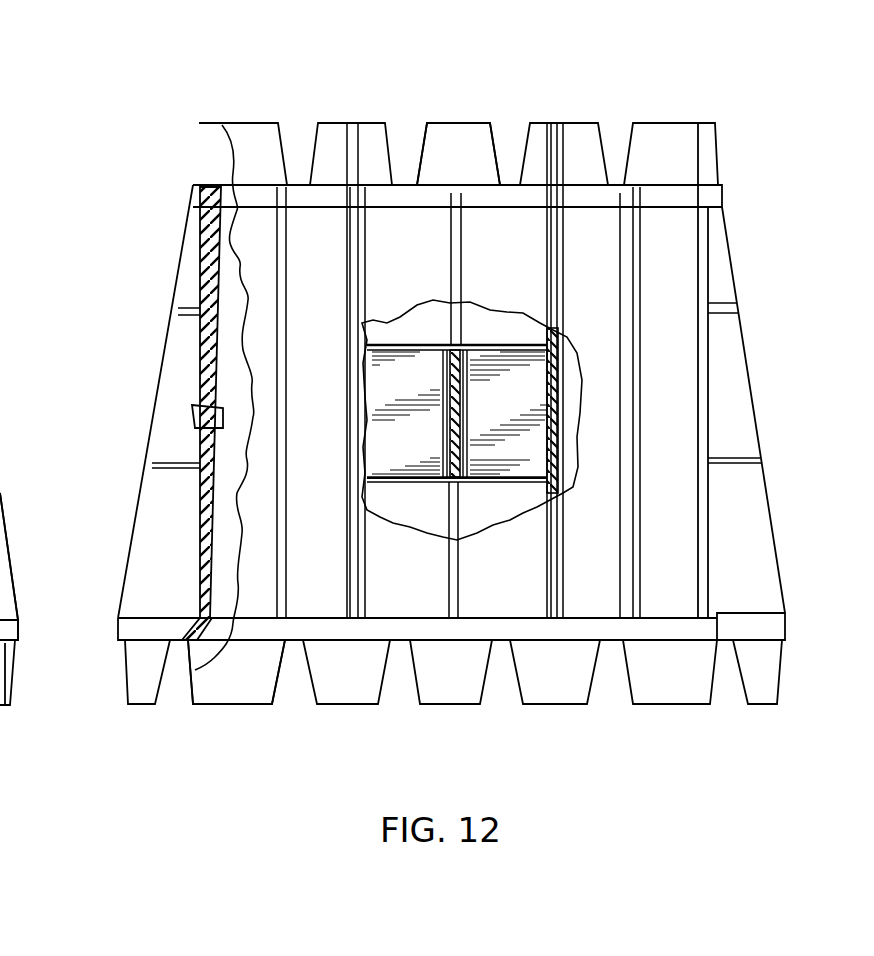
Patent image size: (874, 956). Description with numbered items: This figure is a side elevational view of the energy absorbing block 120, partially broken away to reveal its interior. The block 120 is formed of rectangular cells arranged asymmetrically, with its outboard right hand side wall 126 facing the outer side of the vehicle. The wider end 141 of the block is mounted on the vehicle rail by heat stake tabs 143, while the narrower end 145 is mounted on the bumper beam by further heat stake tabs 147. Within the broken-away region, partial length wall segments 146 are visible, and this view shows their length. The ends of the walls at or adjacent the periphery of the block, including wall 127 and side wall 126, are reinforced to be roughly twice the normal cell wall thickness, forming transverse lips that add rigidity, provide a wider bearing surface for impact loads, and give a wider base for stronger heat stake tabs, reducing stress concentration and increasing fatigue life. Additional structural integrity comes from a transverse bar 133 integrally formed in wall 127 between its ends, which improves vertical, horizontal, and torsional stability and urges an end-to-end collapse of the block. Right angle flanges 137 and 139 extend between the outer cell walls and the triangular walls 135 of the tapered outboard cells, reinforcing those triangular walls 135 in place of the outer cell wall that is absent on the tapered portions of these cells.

The energy absorbing block 120 is at (6, 167).
The right hand side wall 126 is at (8, 362).
The wall 127 is at (197, 552).
The transverse bar 133 is at (193, 422).
The triangular walls 135 is at (0, 552).
The right angle flange 137 is at (175, 468).
The right angle flange 139 is at (193, 308).
The wider end 141 is at (348, 718).
The heat stake tabs 143 is at (250, 687).
The narrower end 145 is at (436, 84).
The wall segments 146 is at (503, 345).
The upper foot 147 is at (468, 135).